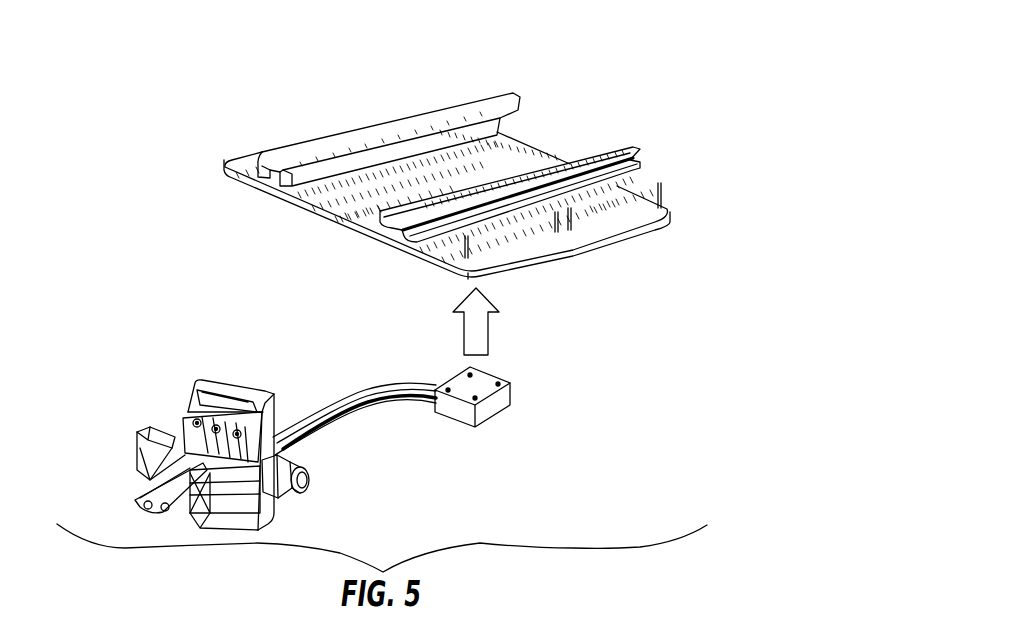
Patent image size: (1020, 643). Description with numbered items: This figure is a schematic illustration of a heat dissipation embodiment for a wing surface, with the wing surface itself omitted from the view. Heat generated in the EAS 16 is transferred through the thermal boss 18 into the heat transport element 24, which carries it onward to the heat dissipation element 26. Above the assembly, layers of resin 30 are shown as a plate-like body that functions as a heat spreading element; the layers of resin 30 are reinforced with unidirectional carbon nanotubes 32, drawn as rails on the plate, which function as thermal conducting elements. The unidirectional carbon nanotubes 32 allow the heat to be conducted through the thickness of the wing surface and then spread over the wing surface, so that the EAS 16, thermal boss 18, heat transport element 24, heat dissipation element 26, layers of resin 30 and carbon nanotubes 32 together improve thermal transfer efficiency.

The EAS 16 is at (179, 451).
The thermal boss 18 is at (196, 402).
The heat transport element 24 is at (350, 408).
The heat dissipation element 26 is at (490, 408).
The layers of resin 30 is at (340, 218).
The unidirectional carbon nanotubes 32 is at (490, 96).